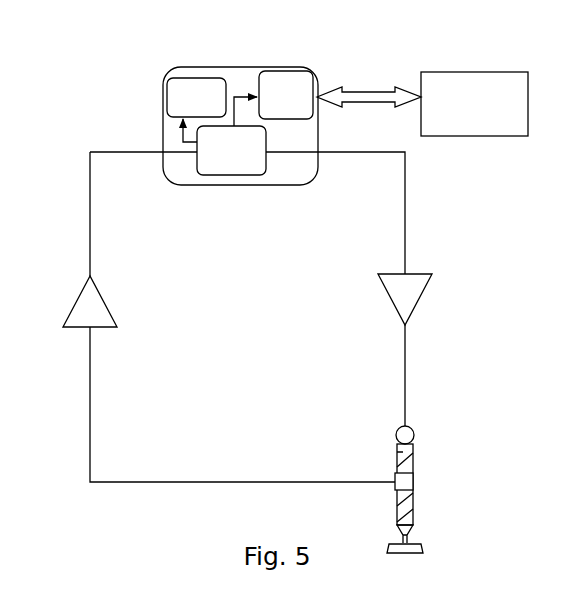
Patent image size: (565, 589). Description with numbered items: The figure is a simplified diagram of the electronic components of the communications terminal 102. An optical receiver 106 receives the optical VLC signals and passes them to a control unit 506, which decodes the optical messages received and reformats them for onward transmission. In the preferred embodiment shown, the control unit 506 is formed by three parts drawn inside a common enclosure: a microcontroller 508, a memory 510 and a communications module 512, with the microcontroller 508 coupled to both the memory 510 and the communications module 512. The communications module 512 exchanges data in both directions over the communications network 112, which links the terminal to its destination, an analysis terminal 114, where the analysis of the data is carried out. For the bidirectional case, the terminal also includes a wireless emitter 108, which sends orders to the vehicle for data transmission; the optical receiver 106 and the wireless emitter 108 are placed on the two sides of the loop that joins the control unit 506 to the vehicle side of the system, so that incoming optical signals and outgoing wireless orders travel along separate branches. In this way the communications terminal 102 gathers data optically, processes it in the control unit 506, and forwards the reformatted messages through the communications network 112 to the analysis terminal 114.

The communications terminal 102 is at (107, 110).
The optical receiver 106 is at (83, 308).
The wireless emitter 108 is at (410, 293).
The communications network 112 is at (372, 98).
The analysis terminal 114 is at (474, 104).
The control unit 506 is at (230, 187).
The microcontroller 508 is at (231, 150).
The memory 510 is at (196, 97).
The communications module 512 is at (286, 95).